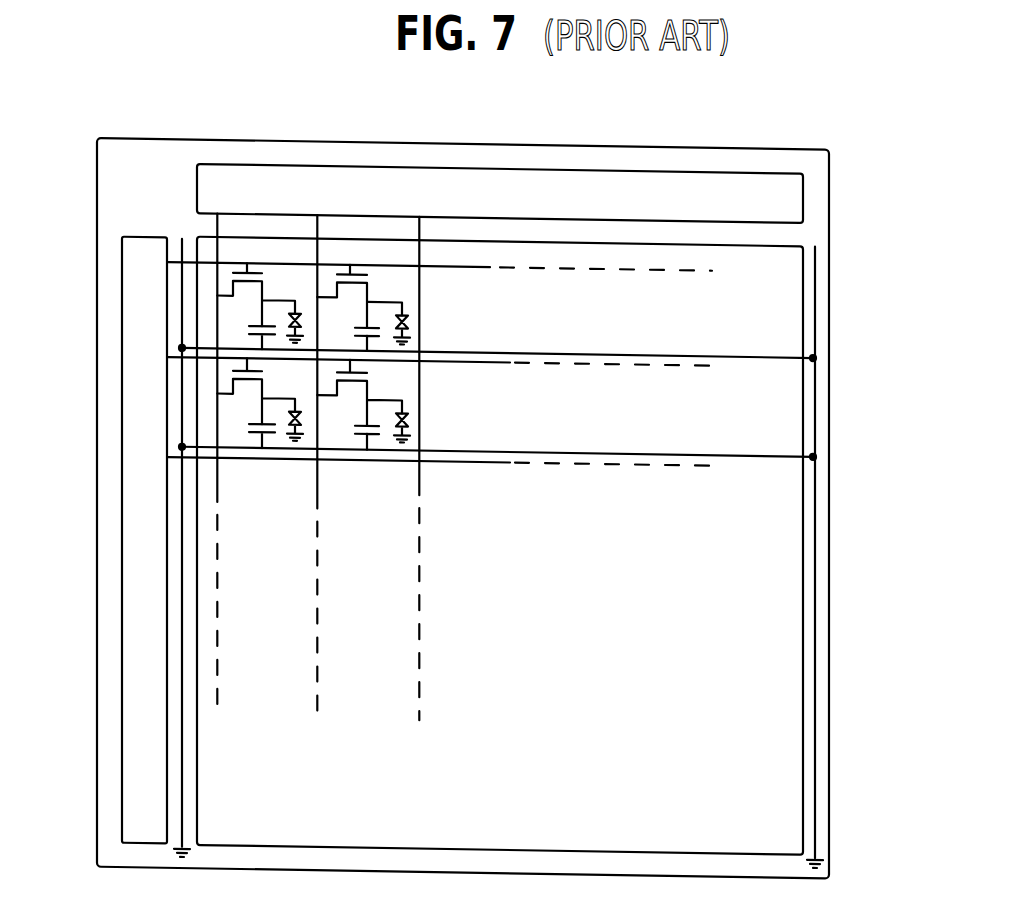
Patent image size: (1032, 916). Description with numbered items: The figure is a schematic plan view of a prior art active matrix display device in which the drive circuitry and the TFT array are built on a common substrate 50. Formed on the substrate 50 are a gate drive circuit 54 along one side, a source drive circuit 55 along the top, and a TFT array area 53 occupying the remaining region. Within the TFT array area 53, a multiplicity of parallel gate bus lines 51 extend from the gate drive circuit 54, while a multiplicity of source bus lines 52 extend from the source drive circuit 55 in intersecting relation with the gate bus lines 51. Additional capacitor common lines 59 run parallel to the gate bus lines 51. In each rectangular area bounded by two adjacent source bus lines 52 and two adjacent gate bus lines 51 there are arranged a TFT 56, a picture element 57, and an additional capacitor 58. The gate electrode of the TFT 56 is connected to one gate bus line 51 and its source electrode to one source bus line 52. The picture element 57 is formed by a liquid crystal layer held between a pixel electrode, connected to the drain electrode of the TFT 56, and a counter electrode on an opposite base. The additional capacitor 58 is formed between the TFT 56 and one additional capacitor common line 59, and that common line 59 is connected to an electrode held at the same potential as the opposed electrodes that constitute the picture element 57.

The substrate 50 is at (812, 137).
The gate bus lines 51 is at (560, 261).
The source bus lines 52 is at (317, 506).
The TFT array area 53 is at (821, 274).
The gate drive circuit 54 is at (133, 808).
The source drive circuit 55 is at (355, 179).
The TFT 56 is at (367, 271).
The picture element 57 is at (409, 314).
The additional capacitor 58 is at (357, 430).
The additional capacitor common lines 59 is at (458, 348).